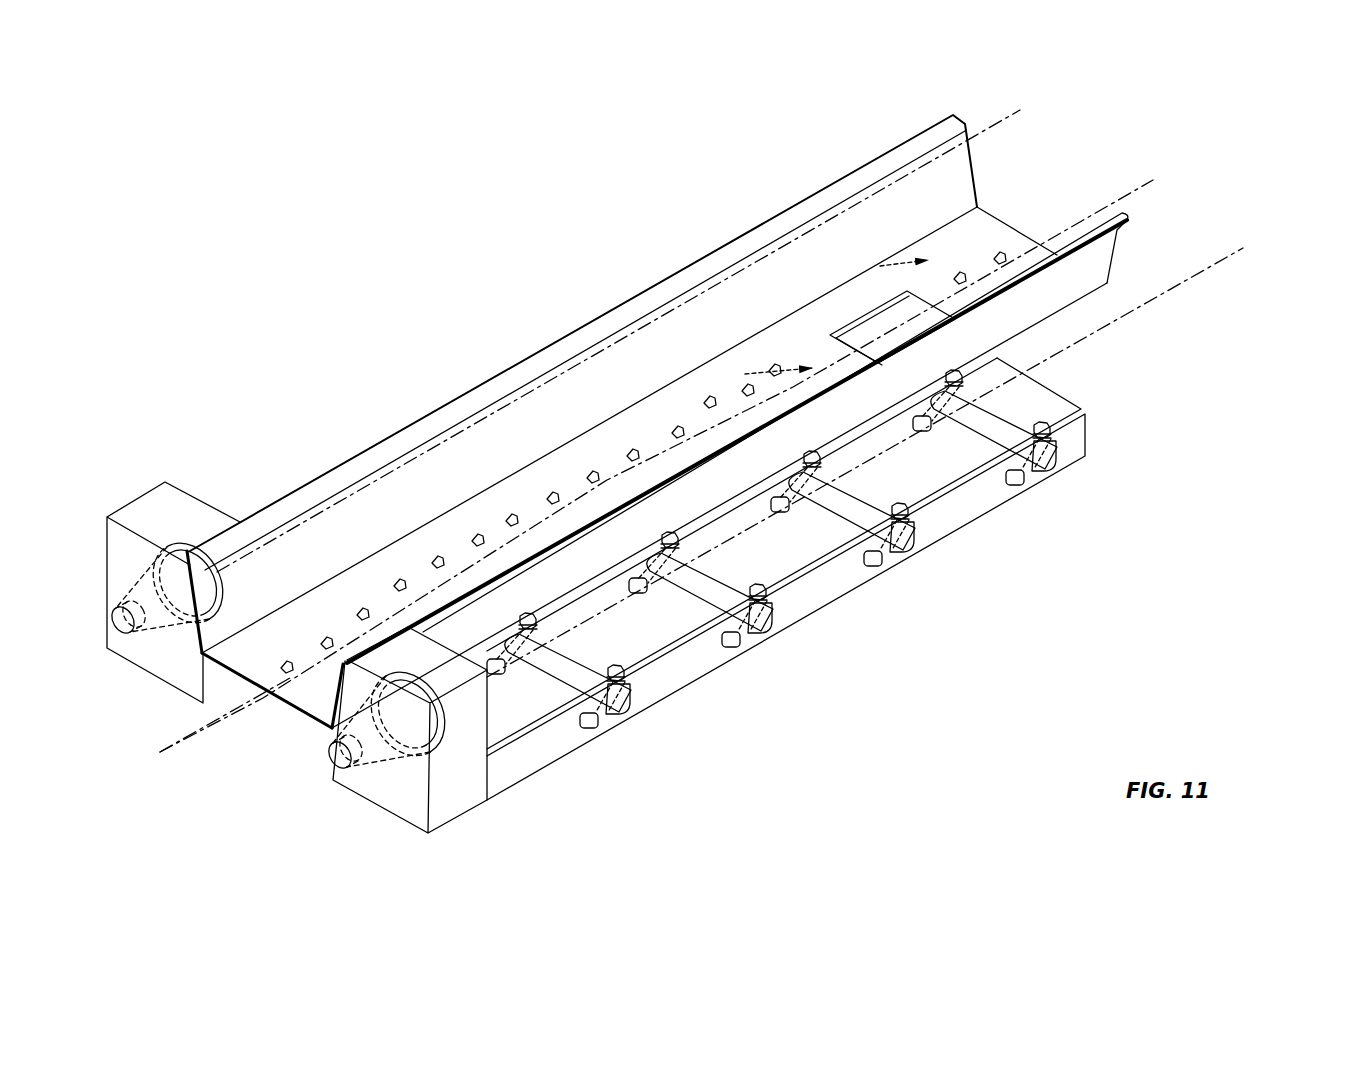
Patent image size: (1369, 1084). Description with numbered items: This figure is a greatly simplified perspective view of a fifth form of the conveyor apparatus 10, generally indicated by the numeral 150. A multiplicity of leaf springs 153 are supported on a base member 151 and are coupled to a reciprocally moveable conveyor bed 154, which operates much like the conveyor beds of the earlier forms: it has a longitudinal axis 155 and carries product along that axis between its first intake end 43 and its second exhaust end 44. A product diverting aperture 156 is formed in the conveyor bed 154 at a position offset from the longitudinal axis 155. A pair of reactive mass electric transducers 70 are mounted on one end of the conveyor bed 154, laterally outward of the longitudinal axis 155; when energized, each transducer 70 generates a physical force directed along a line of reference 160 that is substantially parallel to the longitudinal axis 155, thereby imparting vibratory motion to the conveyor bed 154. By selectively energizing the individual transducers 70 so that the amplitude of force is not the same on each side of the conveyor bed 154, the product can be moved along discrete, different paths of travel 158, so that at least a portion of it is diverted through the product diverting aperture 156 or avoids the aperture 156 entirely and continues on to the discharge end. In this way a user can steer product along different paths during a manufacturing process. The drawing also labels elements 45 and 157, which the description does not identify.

The conveyor apparatus 10 is at (447, 230).
The first intake end 43 is at (317, 693).
The second exhaust end 44 is at (990, 236).
The apertures 45 is at (664, 456).
The reactive mass electric transducers 70 is at (120, 632).
The fifth form of the invention 150 is at (746, 465).
The base member 151 is at (1070, 452).
The leaf springs 153 is at (550, 662).
The reciprocally moveable conveyor bed 154 is at (1092, 268).
The longitudinal axis 155 is at (165, 752).
The product diverting aperture 156 is at (912, 313).
The bearing block 157 is at (141, 504).
The paths of travel 158 is at (728, 398).
The line of reference 160 is at (658, 318).